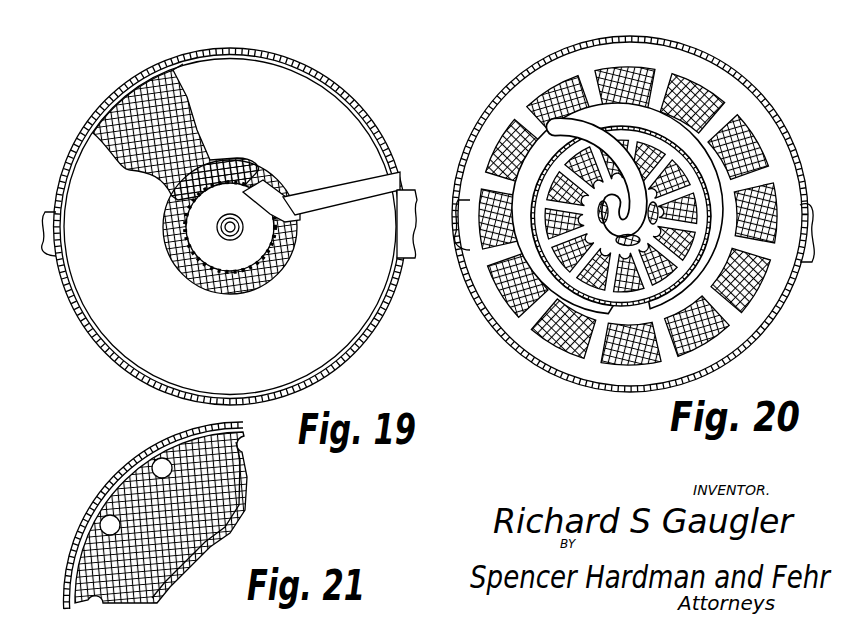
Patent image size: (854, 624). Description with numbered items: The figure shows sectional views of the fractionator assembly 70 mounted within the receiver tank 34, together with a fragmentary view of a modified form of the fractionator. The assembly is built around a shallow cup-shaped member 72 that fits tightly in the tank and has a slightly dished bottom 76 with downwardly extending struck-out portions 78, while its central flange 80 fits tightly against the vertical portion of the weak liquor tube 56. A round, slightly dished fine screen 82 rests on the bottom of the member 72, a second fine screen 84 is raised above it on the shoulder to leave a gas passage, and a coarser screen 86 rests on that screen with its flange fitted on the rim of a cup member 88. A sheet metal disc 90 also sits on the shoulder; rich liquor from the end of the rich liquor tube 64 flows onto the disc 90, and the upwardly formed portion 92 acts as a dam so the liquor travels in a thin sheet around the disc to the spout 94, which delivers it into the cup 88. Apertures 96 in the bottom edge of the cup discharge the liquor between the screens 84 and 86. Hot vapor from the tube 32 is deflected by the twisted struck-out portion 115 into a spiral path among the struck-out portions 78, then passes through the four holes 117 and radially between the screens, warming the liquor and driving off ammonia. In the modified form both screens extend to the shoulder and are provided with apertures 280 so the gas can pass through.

In FIG. 19, the tube 32 is at (56, 256).
In FIG. 20, the tube 32 is at (466, 250).
In FIG. 19, the receiver tank 34 is at (388, 285).
In FIG. 20, the receiver tank 34 is at (745, 101).
In FIG. 19, the weak liquor tube 56 is at (229, 242).
In FIG. 20, the weak liquor tube 56 is at (530, 157).
In FIG. 19, the rich liquor tube 64 is at (409, 190).
In FIG. 20, the rich liquor tube 64 is at (812, 258).
In FIG. 19, the fractionator assembly 70 is at (325, 102).
In FIG. 20, the fractionator assembly 70 is at (672, 61).
In FIG. 19, the shallow cup-shaped member 72 is at (282, 72).
In FIG. 20, the shallow cup-shaped member 72 is at (612, 380).
In FIG. 20, the slightly dished bottom 76 is at (482, 280).
In FIG. 20, the struck-out portions 78 is at (565, 355).
In FIG. 19, the flange 80 is at (243, 228).
In FIG. 20, the fine screen 82 is at (540, 333).
In FIG. 19, the fine screen 84 is at (123, 110).
In FIG. 20, the fine screen 84 is at (660, 206).
In FIG. 19, the coarser screen 86 is at (177, 108).
In FIG. 19, the cup member 88 is at (180, 223).
In FIG. 19, the sheet metal disc 90 is at (318, 315).
In FIG. 19, the upwardly formed portion 92 is at (345, 196).
In FIG. 19, the spout 94 is at (245, 193).
In FIG. 19, the apertures 96 is at (219, 230).
In FIG. 20, the struck-out portion 115 is at (483, 223).
In FIG. 20, the holes 117 is at (641, 240).
In FIG. 21, the apertures 280 is at (152, 466).